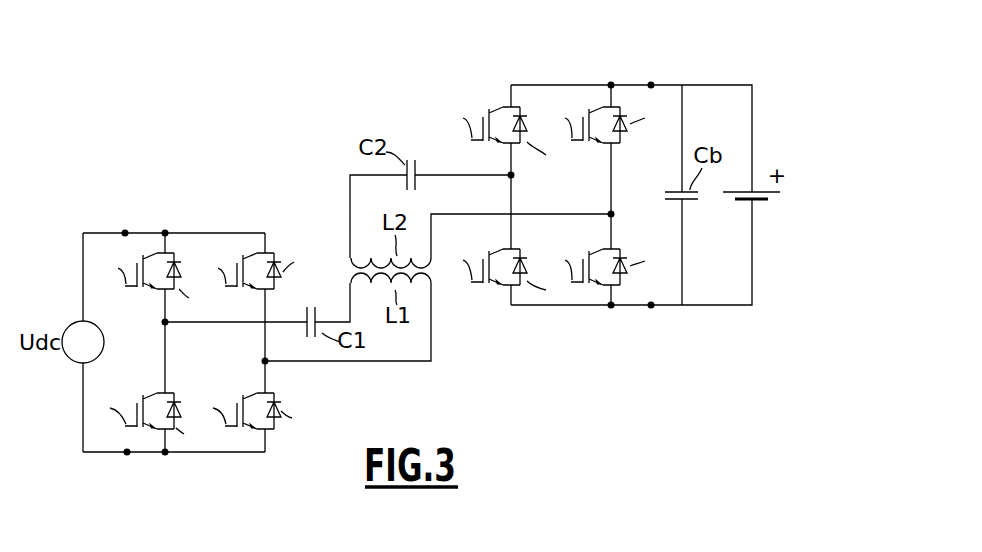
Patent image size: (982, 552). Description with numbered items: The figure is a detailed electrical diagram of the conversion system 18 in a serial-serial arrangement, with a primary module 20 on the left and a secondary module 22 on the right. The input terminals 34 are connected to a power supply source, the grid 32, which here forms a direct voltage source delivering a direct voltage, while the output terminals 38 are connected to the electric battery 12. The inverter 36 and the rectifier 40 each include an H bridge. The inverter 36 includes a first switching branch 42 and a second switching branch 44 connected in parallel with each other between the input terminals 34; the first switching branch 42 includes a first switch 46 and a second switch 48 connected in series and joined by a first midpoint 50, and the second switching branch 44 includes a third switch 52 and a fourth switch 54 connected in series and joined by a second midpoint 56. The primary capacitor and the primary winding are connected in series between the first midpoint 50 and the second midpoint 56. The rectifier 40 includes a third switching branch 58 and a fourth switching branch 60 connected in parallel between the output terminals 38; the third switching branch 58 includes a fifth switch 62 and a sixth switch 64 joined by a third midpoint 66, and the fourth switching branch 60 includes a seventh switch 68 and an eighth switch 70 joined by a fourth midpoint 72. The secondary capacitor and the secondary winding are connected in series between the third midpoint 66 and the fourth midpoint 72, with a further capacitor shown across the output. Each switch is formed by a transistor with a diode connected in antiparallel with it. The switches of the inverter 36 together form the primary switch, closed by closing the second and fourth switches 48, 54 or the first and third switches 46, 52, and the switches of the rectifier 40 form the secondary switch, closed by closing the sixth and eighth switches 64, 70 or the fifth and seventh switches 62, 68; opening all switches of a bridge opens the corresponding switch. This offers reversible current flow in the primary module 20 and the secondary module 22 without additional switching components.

The electric battery 12 is at (755, 200).
The conversion system 18 is at (220, 92).
The primary module 20 is at (257, 194).
The secondary module 22 is at (372, 109).
The grid 32 is at (67, 375).
The input terminals 34 is at (125, 233).
The inverter 36 is at (195, 211).
The output terminals 38 is at (651, 85).
The rectifier 40 is at (573, 63).
The first switching branch 42 is at (150, 325).
The second switching branch 44 is at (253, 334).
The first switch 46 is at (120, 297).
The second switch 48 is at (153, 446).
The first midpoint 50 is at (165, 322).
The third switch 52 is at (281, 229).
The fourth switch 54 is at (285, 449).
The second midpoint 56 is at (266, 361).
The third switching branch 58 is at (464, 154).
The fourth switching branch 60 is at (633, 191).
The fifth switch 62 is at (528, 159).
The sixth switch 64 is at (496, 298).
The third midpoint 66 is at (511, 175).
The seventh switch 68 is at (589, 156).
The eighth switch 70 is at (598, 297).
The fourth midpoint 72 is at (611, 214).